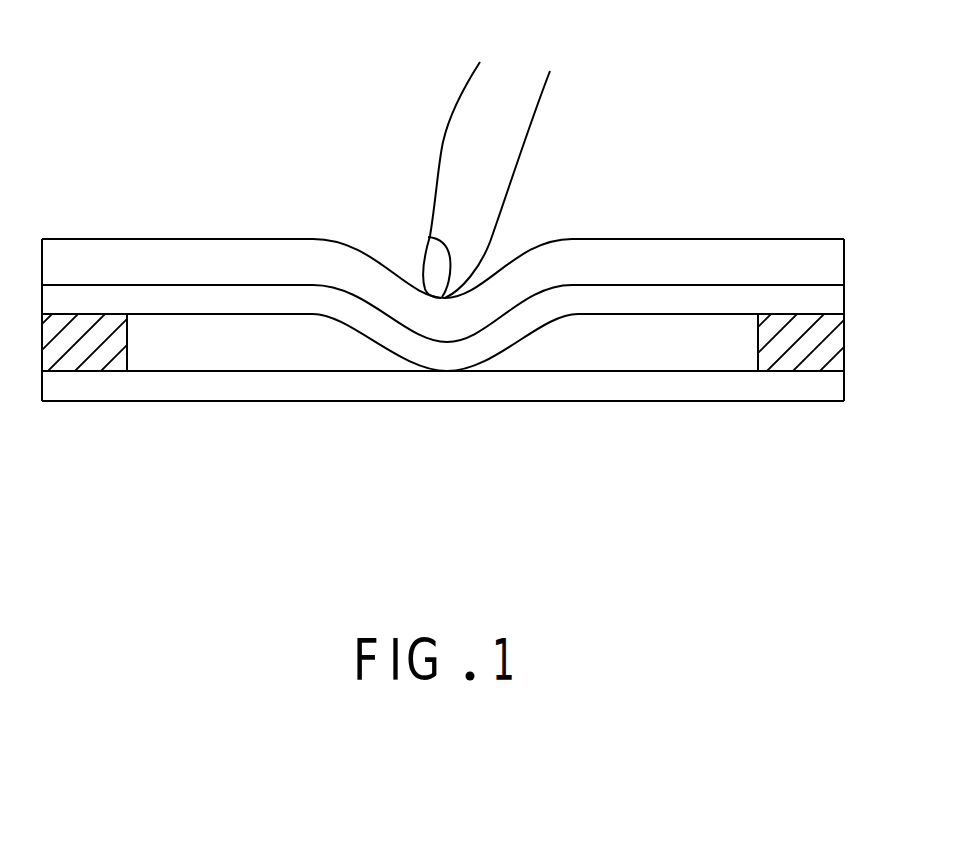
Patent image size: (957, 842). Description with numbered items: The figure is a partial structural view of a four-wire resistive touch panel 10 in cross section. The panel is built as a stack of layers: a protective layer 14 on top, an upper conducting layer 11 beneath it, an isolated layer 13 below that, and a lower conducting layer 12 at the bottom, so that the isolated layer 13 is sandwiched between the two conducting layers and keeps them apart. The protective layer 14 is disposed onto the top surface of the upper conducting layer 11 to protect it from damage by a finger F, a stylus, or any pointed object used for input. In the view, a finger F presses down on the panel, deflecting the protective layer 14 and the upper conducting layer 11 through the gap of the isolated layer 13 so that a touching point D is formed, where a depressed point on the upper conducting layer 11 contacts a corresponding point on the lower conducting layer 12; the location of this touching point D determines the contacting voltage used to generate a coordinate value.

The four-wire resistive touch panel 10 is at (845, 73).
The protective layer 14 is at (830, 260).
The upper conducting layer 11 is at (830, 303).
The isolated layer 13 is at (696, 349).
The lower conducting layer 12 is at (830, 386).
The touching point D is at (448, 370).
The finger F is at (525, 145).